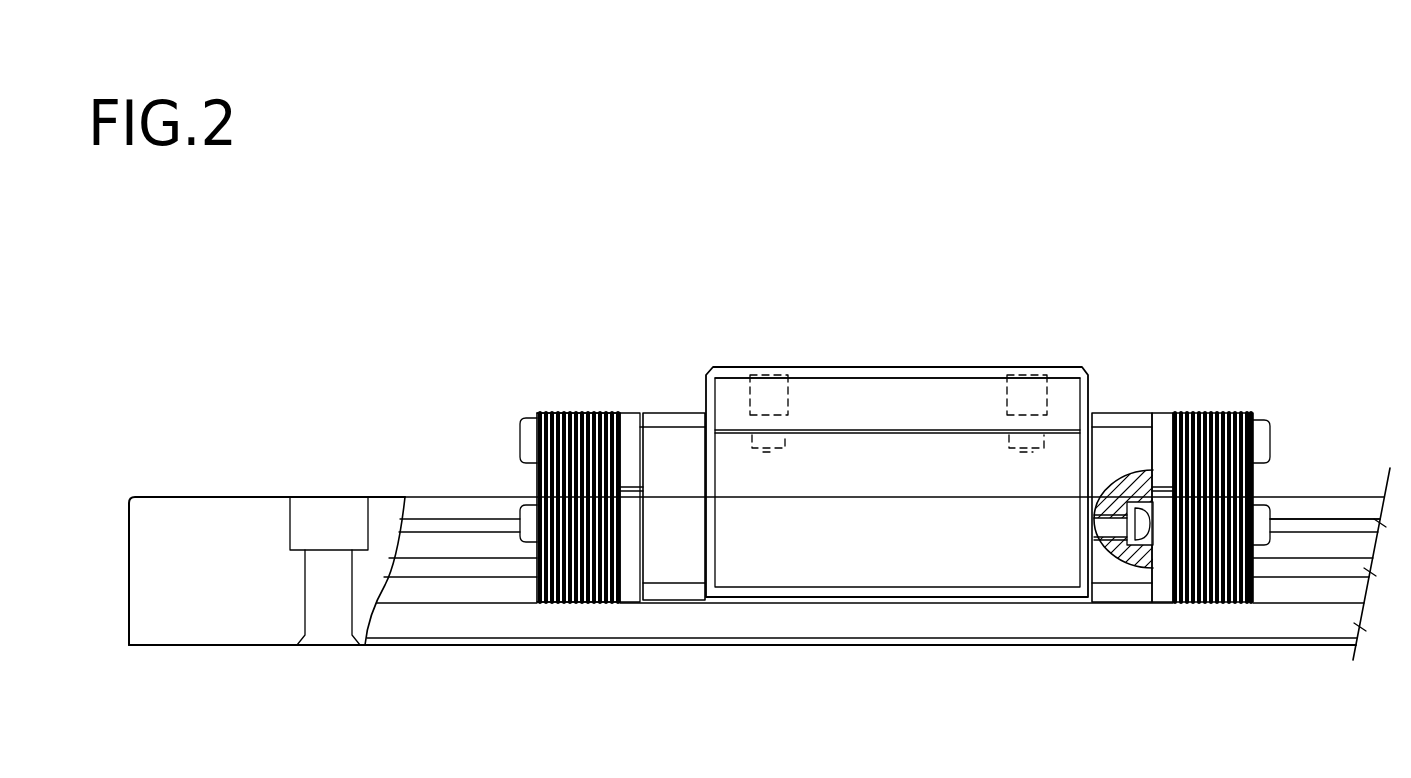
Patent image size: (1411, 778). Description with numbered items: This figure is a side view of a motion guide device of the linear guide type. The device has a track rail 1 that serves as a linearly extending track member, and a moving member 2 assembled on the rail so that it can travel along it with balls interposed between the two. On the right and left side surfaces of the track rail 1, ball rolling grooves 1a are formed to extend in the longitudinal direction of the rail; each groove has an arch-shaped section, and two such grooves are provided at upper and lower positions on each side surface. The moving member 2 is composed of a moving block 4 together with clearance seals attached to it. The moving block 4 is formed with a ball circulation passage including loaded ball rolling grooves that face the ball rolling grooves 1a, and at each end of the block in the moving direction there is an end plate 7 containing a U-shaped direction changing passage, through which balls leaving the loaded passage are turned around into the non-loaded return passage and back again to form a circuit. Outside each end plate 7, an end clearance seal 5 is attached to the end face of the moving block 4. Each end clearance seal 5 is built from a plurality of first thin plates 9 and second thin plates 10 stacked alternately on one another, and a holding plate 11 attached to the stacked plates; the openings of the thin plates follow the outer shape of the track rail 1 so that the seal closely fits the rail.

The track rail 1 is at (1300, 510).
The ball rolling groove 1a is at (1356, 515).
The moving member 2 is at (907, 344).
The moving block 4 is at (1063, 398).
The end clearance seal 5 is at (578, 413).
The end plate 7 is at (678, 418).
The first thin plate 9 is at (538, 413).
The second thin plate 10 is at (548, 413).
The holding plate 11 is at (632, 418).